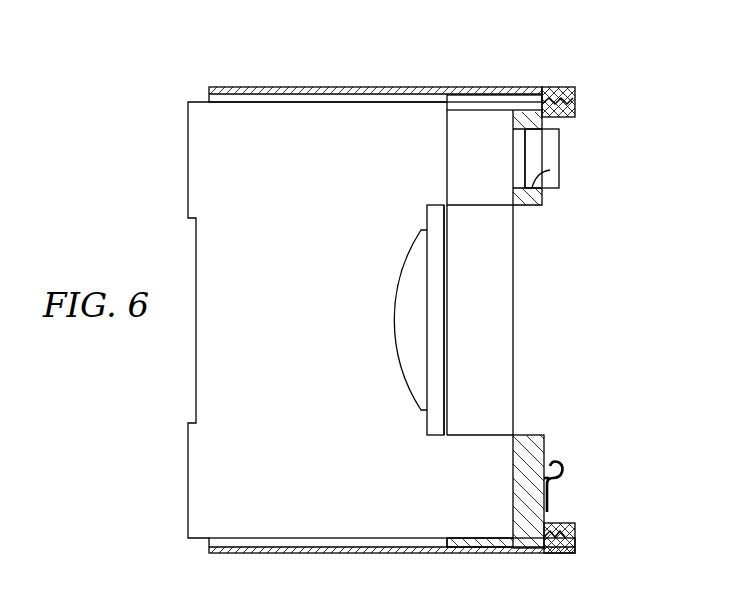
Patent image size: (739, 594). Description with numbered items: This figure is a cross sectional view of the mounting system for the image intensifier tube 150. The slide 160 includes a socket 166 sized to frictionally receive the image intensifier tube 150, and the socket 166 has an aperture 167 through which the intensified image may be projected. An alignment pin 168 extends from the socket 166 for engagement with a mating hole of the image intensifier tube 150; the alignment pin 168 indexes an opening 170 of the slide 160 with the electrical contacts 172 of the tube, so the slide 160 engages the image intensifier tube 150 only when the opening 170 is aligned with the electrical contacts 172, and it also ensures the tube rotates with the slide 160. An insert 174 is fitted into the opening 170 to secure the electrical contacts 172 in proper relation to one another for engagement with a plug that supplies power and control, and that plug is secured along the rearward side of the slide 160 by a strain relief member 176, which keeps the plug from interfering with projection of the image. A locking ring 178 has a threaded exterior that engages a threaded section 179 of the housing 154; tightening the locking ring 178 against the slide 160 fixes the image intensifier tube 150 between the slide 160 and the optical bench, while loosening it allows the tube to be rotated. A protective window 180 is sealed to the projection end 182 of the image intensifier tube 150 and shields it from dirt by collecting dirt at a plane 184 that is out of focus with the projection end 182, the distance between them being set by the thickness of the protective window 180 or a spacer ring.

The image intensifier tube 150 is at (312, 164).
The housing 154 is at (227, 87).
The slide 160 is at (525, 440).
The socket 166 is at (513, 490).
The aperture 167 is at (537, 269).
The alignment pin 168 is at (452, 112).
The opening 170 is at (562, 174).
The electrical contacts 172 is at (517, 167).
The insert 174 is at (535, 150).
The strain relief member 176 is at (558, 495).
The locking ring 178 is at (577, 119).
The threaded section 179 is at (565, 87).
The protective window 180 is at (437, 387).
The projection end 182 is at (397, 340).
The plane 184 is at (446, 345).